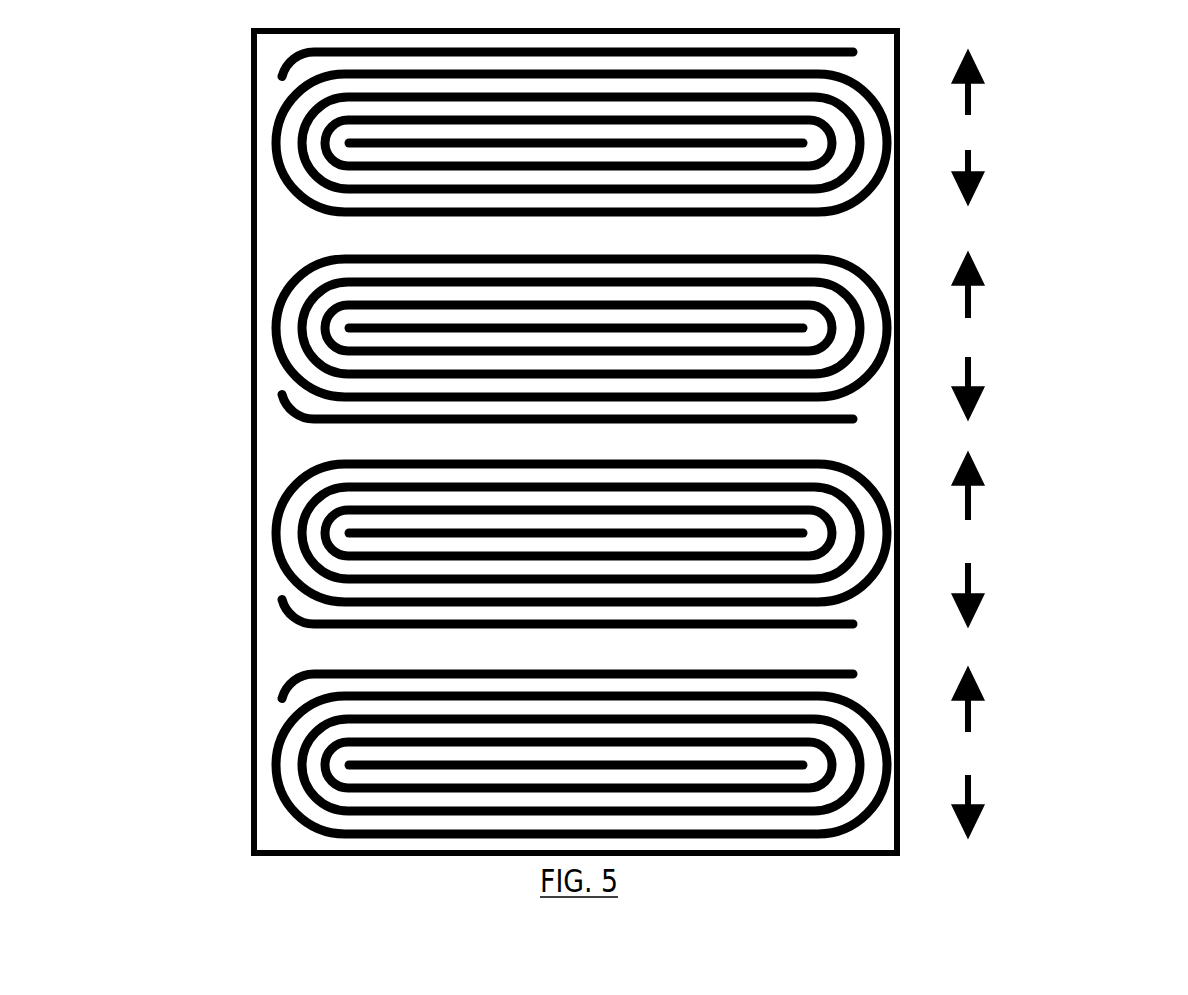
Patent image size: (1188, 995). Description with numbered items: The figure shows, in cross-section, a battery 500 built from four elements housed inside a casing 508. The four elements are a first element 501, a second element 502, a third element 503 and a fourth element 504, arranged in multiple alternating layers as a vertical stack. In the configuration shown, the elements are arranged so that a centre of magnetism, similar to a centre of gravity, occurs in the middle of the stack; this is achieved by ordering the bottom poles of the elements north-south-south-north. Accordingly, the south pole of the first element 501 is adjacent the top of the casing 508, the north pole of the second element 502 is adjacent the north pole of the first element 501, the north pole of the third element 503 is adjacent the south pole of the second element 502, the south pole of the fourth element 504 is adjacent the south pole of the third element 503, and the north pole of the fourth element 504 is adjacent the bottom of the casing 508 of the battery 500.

The battery 500 is at (661, 442).
The first element 501 is at (278, 73).
The second element 502 is at (278, 395).
The third element 503 is at (278, 603).
The fourth element 504 is at (278, 688).
The casing 508 is at (900, 277).